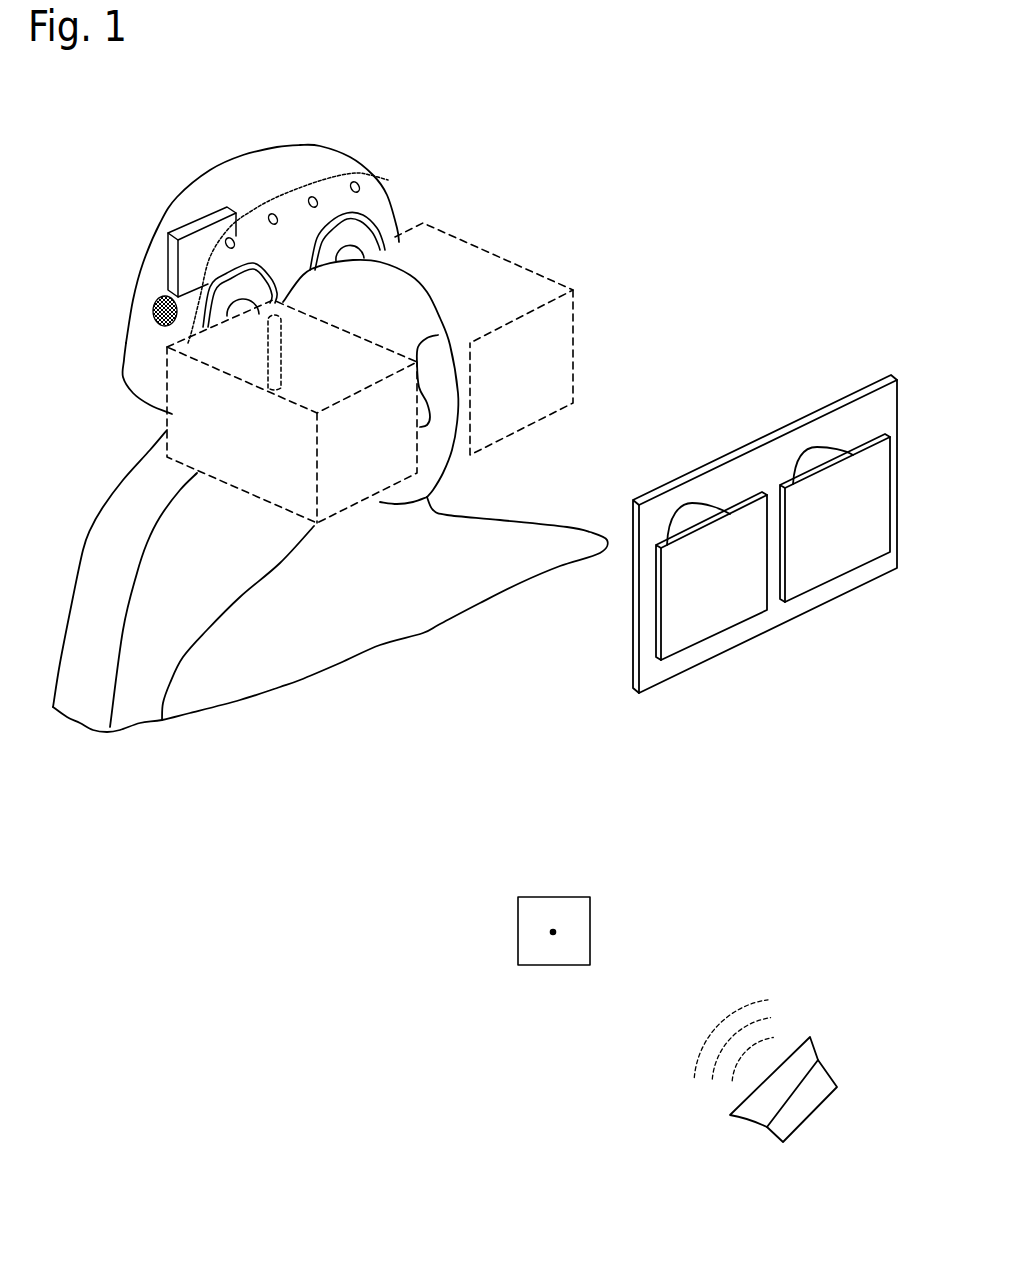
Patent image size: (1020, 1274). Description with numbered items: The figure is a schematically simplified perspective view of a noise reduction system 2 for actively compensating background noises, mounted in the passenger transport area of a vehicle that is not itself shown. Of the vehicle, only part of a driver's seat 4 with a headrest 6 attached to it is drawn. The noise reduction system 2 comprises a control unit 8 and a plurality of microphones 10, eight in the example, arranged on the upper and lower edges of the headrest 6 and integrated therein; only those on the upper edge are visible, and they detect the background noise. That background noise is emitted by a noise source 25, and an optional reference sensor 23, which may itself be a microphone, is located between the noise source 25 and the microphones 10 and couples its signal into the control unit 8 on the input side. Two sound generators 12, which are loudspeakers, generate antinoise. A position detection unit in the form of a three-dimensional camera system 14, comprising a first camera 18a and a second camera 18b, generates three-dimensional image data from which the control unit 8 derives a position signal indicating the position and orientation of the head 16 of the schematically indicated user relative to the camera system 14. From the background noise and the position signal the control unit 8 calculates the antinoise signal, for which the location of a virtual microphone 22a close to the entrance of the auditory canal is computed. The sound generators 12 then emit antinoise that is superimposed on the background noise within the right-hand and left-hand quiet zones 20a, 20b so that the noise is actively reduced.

The noise reduction system 2 is at (549, 158).
The driver's seat 4 is at (108, 558).
The headrest 6 is at (248, 180).
The control unit 8 is at (182, 231).
The microphones 10 is at (229, 238).
The sound generator 12 is at (318, 240).
The 3D camera system 14 is at (767, 460).
The head 16 is at (433, 300).
The first camera 18a is at (717, 607).
The second camera 18b is at (837, 552).
The right-hand quiet zone 20a is at (252, 474).
The left-hand quiet zone 20b is at (530, 297).
The virtual microphone 22a is at (270, 358).
The reference sensor 23 is at (570, 908).
The noise source 25 is at (777, 1130).